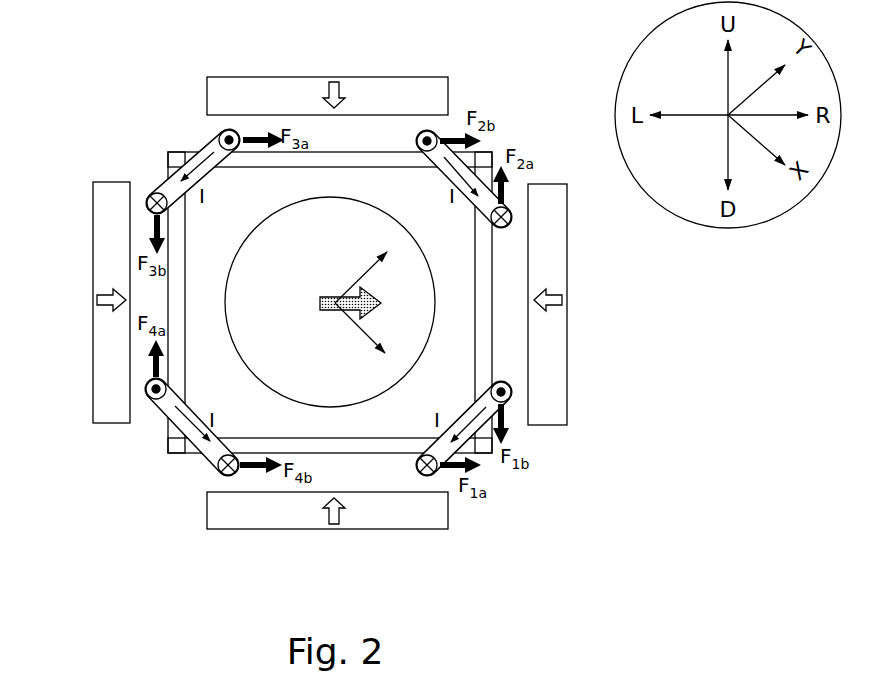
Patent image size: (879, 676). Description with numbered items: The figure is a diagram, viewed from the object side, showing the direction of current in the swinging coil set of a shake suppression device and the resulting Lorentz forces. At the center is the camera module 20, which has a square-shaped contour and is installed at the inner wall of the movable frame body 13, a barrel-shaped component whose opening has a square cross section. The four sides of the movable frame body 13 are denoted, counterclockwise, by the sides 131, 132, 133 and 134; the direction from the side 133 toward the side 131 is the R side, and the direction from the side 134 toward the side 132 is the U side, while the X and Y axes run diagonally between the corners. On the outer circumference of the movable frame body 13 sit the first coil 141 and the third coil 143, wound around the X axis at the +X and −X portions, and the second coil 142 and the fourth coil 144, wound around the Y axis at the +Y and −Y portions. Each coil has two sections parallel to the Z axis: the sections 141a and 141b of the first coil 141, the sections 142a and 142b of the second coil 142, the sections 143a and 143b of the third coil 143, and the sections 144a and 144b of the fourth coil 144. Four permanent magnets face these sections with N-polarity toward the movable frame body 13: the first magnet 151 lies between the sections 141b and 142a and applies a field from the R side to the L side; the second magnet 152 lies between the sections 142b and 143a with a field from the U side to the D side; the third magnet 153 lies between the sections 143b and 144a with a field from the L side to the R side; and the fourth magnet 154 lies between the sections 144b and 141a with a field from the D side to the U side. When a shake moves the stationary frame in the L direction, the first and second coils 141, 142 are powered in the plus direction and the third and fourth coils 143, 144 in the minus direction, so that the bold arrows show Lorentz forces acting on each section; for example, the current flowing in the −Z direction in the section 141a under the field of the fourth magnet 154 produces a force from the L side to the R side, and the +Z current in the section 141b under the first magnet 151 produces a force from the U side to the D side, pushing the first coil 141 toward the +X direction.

The movable frame body 13 is at (339, 316).
The camera module 20 is at (470, 333).
The side of the movable frame body 131 is at (493, 252).
The side of the movable frame body 132 is at (361, 150).
The side of the movable frame body 133 is at (165, 290).
The side of the movable frame body 134 is at (372, 457).
The first coil 141 is at (509, 504).
The section of the first coil 141a is at (434, 476).
The section of the first coil 141b is at (508, 403).
The second coil 142 is at (515, 137).
The section of the second coil 142a is at (509, 209).
The section of the second coil 142b is at (433, 133).
The third coil 143 is at (135, 136).
The section of the third coil 143a is at (222, 132).
The section of the third coil 143b is at (150, 196).
The fourth coil 144 is at (135, 466).
The section of the fourth coil 144a is at (150, 397).
The section of the fourth coil 144b is at (220, 473).
The first magnet 151 is at (560, 362).
The second magnet 152 is at (277, 77).
The third magnet 153 is at (98, 350).
The fourth magnet 154 is at (287, 510).